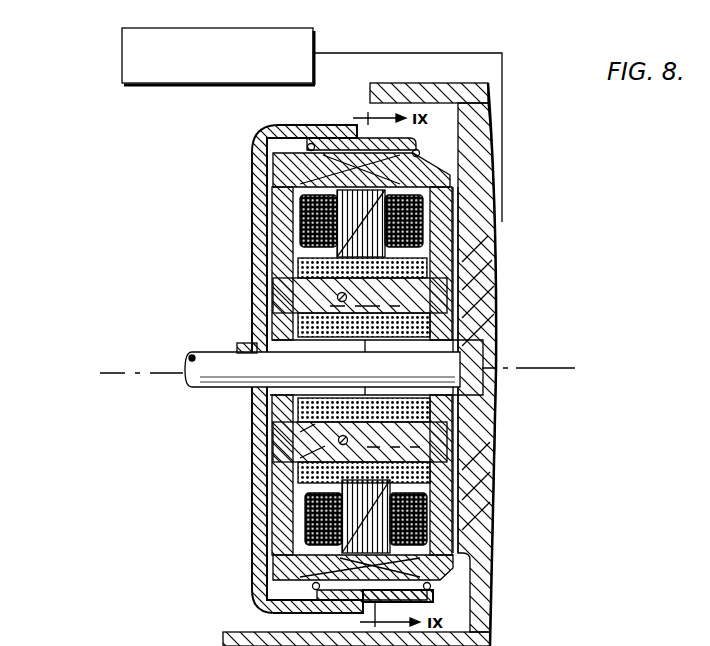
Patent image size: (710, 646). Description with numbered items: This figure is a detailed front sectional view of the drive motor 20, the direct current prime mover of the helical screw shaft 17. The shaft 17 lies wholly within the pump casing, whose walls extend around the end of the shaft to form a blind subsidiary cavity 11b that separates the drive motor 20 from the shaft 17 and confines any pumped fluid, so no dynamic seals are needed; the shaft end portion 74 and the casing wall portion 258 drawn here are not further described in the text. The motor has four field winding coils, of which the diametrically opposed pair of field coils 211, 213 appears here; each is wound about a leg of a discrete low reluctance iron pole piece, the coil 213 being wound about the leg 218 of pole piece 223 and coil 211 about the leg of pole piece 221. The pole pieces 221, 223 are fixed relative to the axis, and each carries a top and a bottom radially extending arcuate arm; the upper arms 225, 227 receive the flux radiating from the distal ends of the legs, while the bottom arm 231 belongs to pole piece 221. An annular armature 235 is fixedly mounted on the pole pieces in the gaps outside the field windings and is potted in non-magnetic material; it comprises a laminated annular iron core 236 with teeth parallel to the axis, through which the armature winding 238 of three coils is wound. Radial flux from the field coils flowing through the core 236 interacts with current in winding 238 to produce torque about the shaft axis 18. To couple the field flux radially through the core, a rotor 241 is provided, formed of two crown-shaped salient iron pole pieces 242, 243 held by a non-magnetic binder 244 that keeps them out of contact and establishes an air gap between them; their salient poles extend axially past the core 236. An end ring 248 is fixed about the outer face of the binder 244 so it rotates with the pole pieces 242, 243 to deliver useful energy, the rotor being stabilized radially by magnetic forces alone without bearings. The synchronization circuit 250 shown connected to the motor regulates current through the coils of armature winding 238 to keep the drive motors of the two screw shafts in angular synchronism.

The synchronization circuit 250 is at (313, 38).
The end ring 248 is at (285, 125).
The non-magnetic binder 244 is at (353, 138).
The rotor 241 is at (441, 140).
The salient pole piece 243 is at (262, 153).
The salient pole piece 242 is at (468, 153).
The annular armature 235 is at (452, 176).
The upper radially extending arcuate arm 225 is at (446, 207).
The pole piece 221 is at (457, 252).
The field winding coil 211 is at (443, 322).
The drive motor 20 is at (538, 354).
The blind subsidiary cavity 11b is at (478, 383).
The shaft 74 is at (365, 398).
The longitudinal shaft axis 18 is at (123, 374).
The shaft 17 is at (200, 390).
The armature winding 238 is at (312, 232).
The laminated annular core 236 is at (335, 250).
The bottom arcuate arm 231 is at (327, 303).
The leg 218 is at (427, 455).
The field winding coil 213 is at (453, 468).
The pole piece 223 is at (459, 500).
The upper radially extending arcuate arm 227 is at (457, 533).
The frame bottom wall 258 is at (484, 590).